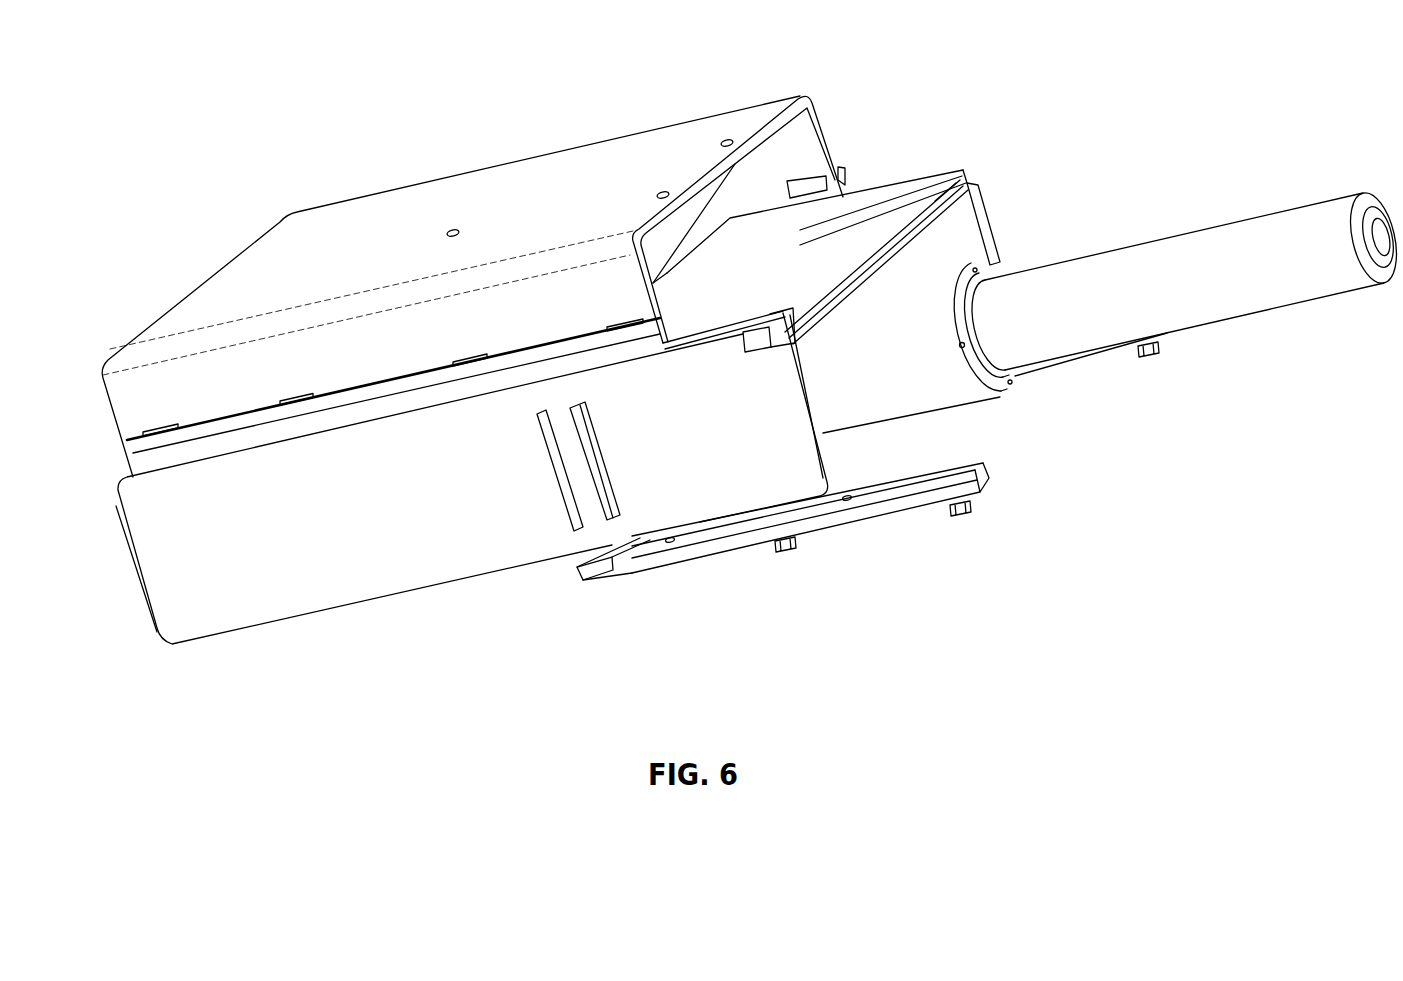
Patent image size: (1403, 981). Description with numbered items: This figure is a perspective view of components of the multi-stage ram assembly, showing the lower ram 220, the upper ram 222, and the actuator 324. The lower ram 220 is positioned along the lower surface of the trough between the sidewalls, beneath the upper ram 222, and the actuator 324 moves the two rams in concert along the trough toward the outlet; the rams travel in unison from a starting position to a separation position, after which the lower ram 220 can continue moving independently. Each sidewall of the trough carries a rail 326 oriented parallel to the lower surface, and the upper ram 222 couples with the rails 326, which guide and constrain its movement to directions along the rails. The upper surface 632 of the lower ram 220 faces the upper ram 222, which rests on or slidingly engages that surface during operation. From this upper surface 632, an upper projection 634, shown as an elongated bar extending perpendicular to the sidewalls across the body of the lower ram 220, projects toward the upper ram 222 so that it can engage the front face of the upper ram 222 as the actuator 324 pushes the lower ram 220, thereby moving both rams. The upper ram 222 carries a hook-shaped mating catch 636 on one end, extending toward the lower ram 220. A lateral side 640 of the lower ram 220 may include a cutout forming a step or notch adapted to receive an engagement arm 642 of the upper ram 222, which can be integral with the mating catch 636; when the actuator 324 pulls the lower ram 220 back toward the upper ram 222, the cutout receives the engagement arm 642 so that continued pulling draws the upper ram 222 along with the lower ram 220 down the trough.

The lower ram 220 is at (123, 557).
The upper ram 222 is at (172, 306).
The actuator 324 is at (1311, 213).
The rail 326 is at (130, 447).
The upper surface 632 is at (847, 230).
The upper projection 634 is at (922, 218).
The mating catch 636 is at (807, 293).
The lateral side 640 is at (203, 640).
The engagement arm 642 is at (745, 345).